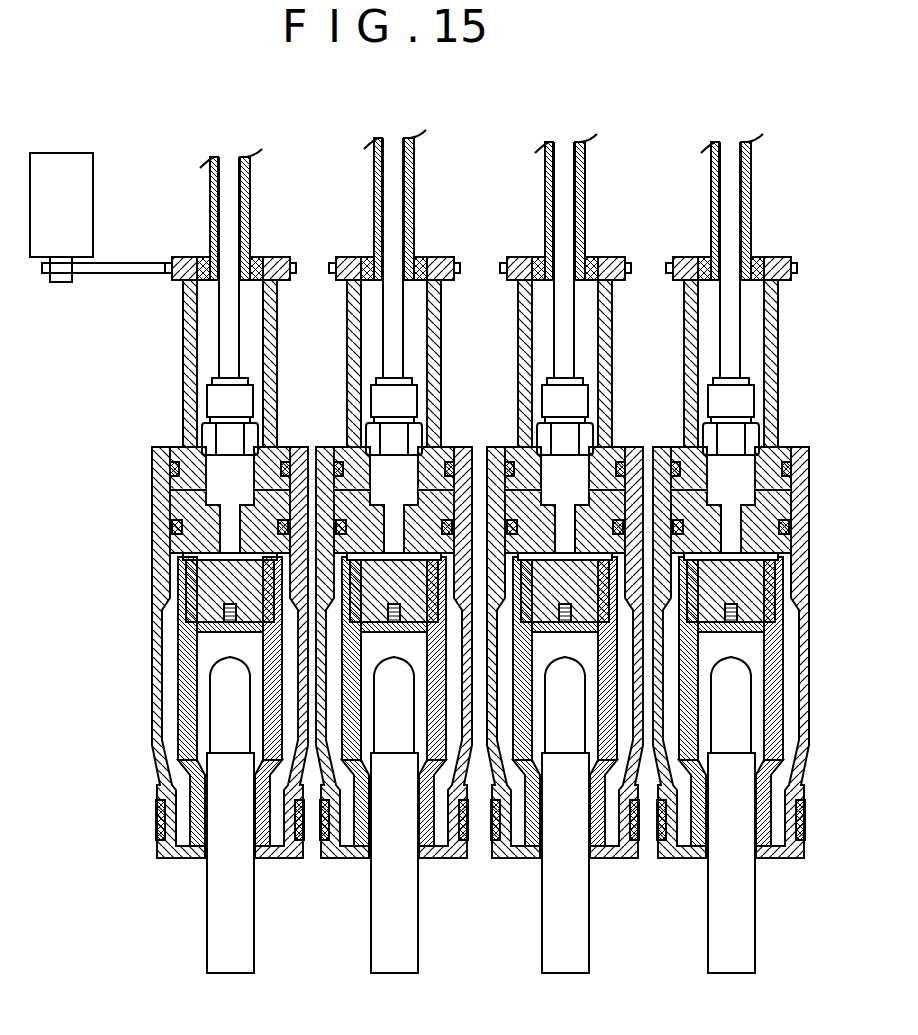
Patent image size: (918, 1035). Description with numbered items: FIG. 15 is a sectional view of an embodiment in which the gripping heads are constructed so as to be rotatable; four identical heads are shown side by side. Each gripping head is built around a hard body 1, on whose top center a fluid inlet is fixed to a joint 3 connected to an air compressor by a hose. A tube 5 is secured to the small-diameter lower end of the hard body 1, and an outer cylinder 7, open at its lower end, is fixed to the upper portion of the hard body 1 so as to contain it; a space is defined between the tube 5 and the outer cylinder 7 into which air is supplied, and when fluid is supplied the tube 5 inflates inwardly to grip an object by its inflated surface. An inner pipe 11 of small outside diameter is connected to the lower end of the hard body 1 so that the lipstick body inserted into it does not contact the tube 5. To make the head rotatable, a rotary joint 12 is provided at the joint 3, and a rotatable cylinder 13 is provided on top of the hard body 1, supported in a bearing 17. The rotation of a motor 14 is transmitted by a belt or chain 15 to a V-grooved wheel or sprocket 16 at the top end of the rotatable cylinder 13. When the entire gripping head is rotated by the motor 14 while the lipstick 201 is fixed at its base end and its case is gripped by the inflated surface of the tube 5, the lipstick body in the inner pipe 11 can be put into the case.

The hard body 1 is at (180, 512).
The joint 3 is at (228, 440).
The tube 5 is at (178, 683).
The outer cylinder 7 is at (180, 577).
The inner pipe 11 is at (180, 755).
The rotary joint 12 is at (213, 400).
The rotatable cylinder 13 is at (277, 335).
The motor 14 is at (93, 168).
The belt or chain 15 is at (120, 262).
The V-grooved wheel or sprocket 16 is at (281, 255).
The bearing 17 is at (201, 255).
The lipstick 201 is at (205, 919).